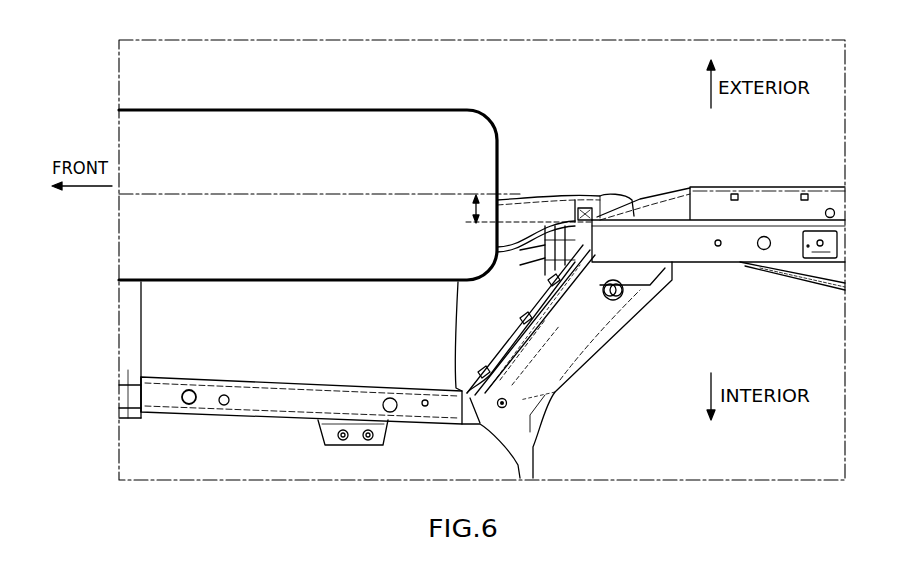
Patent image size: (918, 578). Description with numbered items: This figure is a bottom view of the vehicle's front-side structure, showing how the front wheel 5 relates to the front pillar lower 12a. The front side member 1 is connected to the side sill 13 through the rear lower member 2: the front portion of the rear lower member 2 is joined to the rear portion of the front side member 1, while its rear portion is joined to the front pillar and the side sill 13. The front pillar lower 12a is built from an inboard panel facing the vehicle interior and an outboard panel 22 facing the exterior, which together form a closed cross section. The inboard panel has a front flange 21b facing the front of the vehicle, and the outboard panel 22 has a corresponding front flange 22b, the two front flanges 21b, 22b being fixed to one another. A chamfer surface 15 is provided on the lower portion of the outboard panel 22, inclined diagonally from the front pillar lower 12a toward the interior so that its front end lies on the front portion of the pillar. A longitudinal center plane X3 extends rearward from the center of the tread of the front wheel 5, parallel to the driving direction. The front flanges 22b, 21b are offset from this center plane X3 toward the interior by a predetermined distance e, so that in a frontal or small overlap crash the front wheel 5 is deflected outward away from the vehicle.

The front side member 1 is at (262, 402).
The rear lower member 2 is at (572, 370).
The front wheel 5 is at (130, 238).
The front pillar lower 12a is at (606, 138).
The side sill 13 is at (817, 186).
The chamfer surface 15 is at (660, 194).
The front flange 21b is at (552, 270).
The outboard panel 22 is at (627, 188).
The front flange 22b is at (583, 206).
The longitudinal center plane X3 is at (300, 190).
The predetermined distance e is at (522, 209).